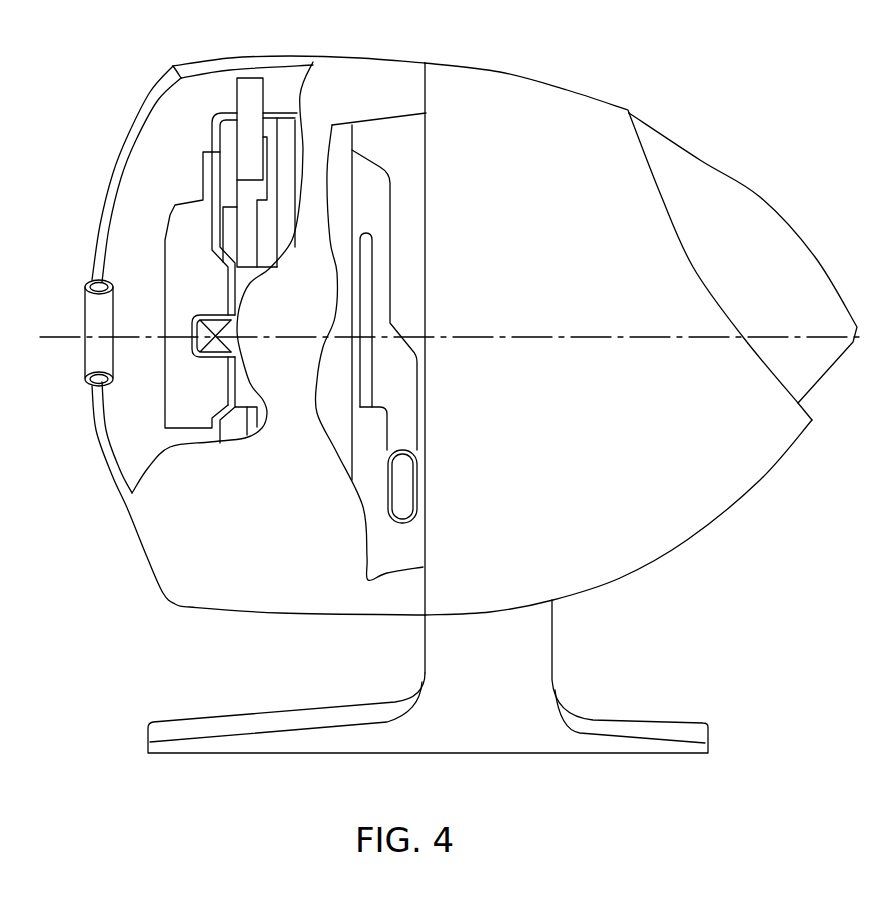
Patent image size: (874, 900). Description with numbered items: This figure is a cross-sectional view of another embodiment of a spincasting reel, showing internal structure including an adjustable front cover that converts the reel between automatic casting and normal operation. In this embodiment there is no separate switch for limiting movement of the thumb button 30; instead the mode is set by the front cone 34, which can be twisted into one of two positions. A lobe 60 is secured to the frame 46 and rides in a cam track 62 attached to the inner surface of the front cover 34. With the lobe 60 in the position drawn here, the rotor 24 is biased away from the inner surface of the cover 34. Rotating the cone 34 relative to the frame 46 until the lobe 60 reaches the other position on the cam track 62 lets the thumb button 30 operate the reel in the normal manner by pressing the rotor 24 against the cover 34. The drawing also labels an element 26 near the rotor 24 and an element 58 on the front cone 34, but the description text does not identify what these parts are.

The rotor 24 is at (217, 130).
The block 26 is at (250, 88).
The thumb button 30 is at (762, 200).
The front cone 34 is at (121, 179).
The frame 46 is at (496, 692).
The collar 58 is at (85, 313).
The lobe 60 is at (403, 480).
The cam track 62 is at (392, 253).